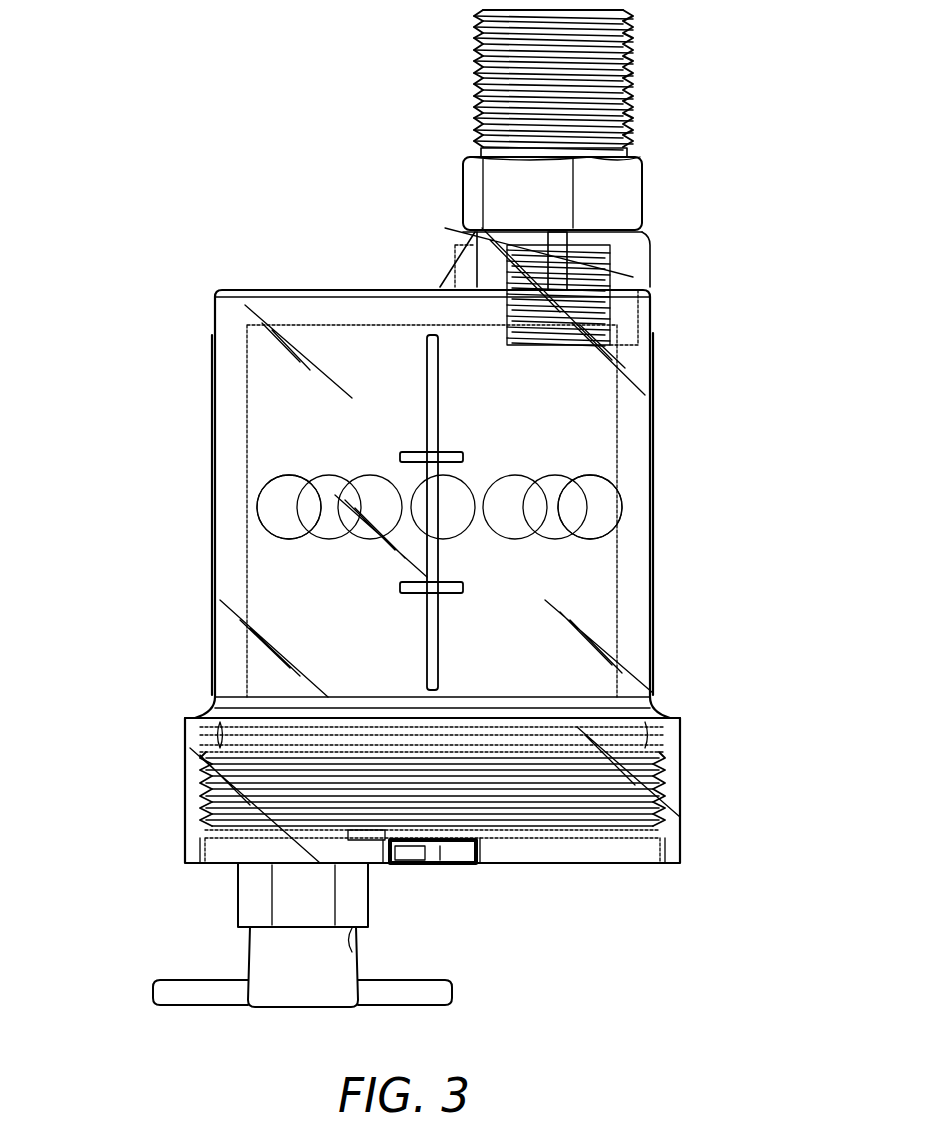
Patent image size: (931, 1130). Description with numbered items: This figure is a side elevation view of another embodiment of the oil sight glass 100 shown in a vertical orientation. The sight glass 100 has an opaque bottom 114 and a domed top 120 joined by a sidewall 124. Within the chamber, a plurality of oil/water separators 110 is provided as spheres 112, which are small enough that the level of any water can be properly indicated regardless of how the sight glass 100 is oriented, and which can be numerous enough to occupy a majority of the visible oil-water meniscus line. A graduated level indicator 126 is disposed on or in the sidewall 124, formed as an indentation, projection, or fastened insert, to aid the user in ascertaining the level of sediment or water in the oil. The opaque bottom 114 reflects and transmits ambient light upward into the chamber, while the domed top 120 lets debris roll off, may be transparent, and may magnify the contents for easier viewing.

The sight glass 100 is at (733, 121).
The oil/water separator 110 is at (333, 527).
The spheres 112 is at (439, 507).
The opaque bottom 114 is at (565, 714).
The domed top 120 is at (432, 292).
The sidewall 124 is at (228, 380).
The graduated level indicator 126 is at (652, 385).